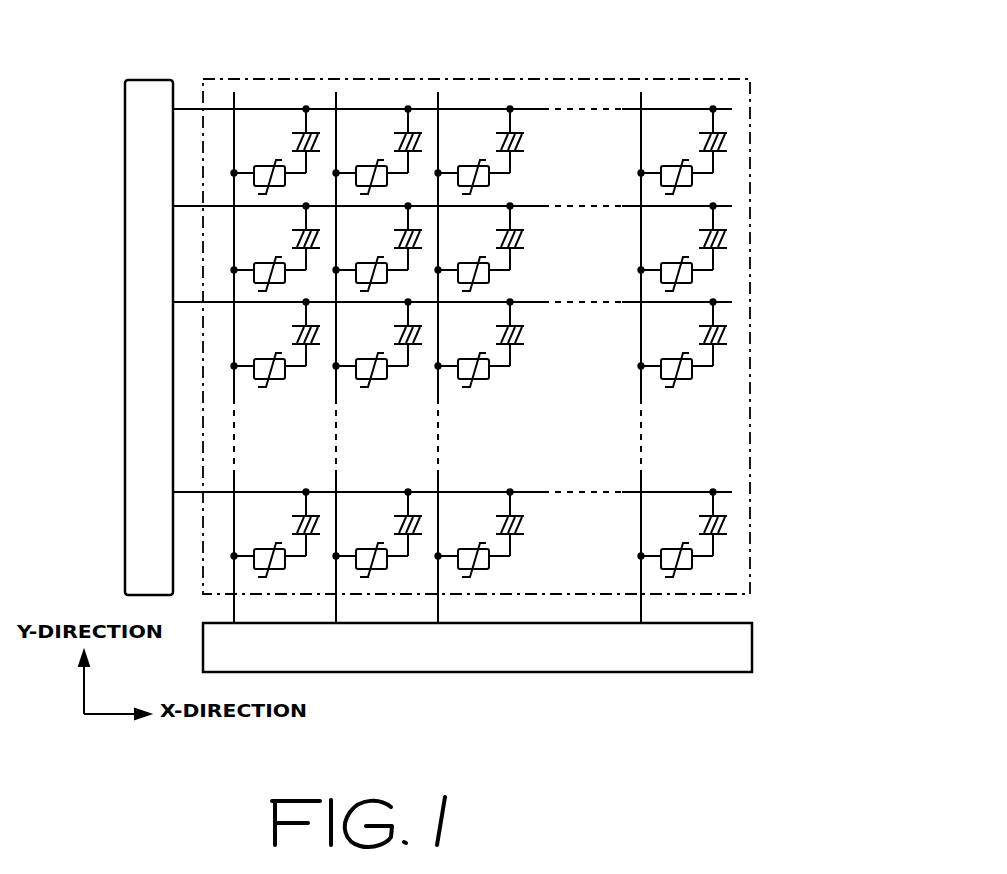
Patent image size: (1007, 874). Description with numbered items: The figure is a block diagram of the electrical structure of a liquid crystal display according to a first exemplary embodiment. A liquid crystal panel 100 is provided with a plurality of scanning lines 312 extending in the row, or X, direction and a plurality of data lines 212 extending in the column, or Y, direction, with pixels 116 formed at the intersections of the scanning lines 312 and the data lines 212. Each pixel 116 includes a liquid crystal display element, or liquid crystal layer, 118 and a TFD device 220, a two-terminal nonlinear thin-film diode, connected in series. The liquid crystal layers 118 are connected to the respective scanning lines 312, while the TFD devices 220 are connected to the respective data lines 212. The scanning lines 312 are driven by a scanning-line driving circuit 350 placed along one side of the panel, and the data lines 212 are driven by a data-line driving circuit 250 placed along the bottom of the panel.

The liquid crystal panel 100 is at (527, 78).
The pixel 116 is at (515, 361).
The liquid crystal display element 118 is at (522, 343).
The data line 212 is at (336, 475).
The TFD device 220 is at (483, 377).
The data-line driving circuit 250 is at (752, 645).
The scanning line 312 is at (528, 205).
The scanning-line driving circuit 350 is at (150, 80).